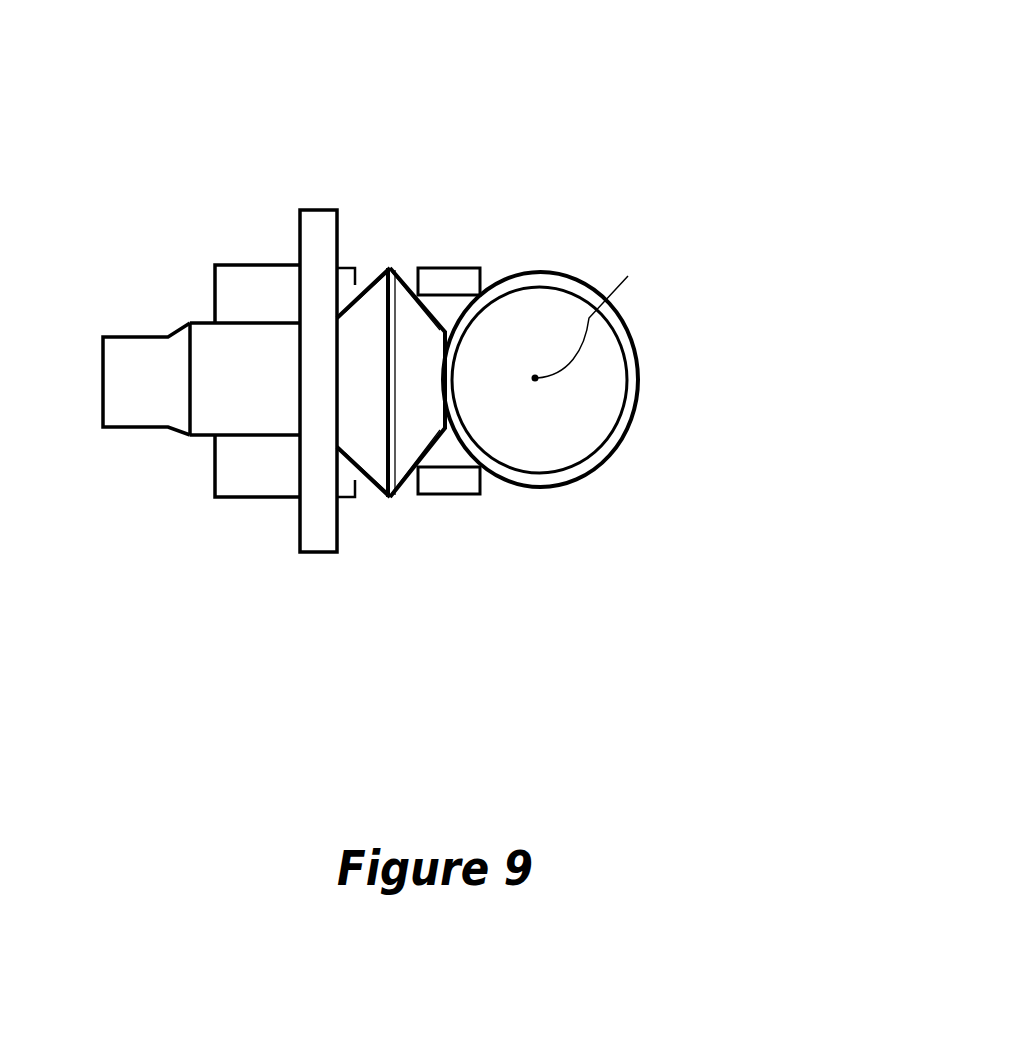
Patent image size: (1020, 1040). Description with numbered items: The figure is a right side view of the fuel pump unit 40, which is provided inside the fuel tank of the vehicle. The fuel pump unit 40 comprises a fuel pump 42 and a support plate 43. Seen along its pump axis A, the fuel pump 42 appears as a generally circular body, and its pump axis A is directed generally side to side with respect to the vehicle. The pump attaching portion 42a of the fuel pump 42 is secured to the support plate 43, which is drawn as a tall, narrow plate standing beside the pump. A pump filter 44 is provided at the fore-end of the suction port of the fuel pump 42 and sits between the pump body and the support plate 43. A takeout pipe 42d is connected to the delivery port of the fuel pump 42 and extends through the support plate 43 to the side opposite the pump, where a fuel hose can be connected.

The fuel pump unit 40 is at (75, 66).
The fuel pump 42 is at (553, 275).
The pump attaching portion 42a is at (241, 410).
The takeout pipe 42d is at (137, 410).
The support plate 43 is at (322, 528).
The pump filter 44 is at (410, 323).